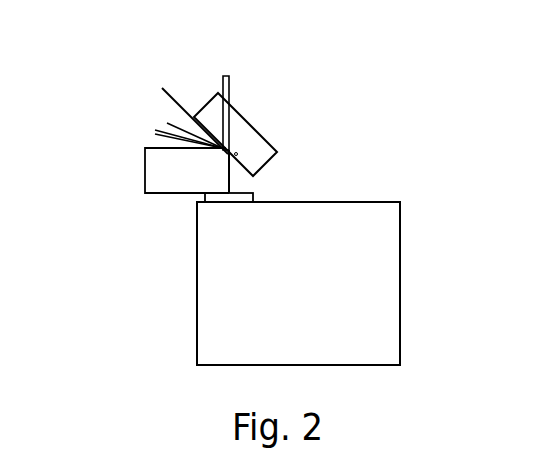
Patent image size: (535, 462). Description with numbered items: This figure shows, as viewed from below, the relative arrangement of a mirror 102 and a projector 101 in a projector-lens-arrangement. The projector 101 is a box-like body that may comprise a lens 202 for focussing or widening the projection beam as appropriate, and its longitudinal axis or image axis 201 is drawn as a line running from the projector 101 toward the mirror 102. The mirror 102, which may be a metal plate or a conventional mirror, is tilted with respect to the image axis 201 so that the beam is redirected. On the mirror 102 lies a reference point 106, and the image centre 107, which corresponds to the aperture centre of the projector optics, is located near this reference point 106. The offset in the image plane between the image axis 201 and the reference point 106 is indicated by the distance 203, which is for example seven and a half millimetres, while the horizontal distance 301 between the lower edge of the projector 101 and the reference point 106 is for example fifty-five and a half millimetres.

The projector 101 is at (332, 223).
The mirror 102 is at (256, 146).
The reference point 106 is at (167, 123).
The image centre 107 is at (245, 148).
The image axis 201 is at (232, 93).
The lens 202 is at (202, 197).
The distance between image axis and reference point 203 is at (226, 77).
The horizontal distance between lower edge of projector and reference point 301 is at (145, 173).